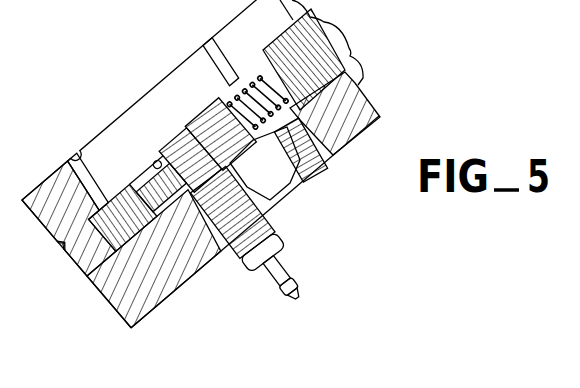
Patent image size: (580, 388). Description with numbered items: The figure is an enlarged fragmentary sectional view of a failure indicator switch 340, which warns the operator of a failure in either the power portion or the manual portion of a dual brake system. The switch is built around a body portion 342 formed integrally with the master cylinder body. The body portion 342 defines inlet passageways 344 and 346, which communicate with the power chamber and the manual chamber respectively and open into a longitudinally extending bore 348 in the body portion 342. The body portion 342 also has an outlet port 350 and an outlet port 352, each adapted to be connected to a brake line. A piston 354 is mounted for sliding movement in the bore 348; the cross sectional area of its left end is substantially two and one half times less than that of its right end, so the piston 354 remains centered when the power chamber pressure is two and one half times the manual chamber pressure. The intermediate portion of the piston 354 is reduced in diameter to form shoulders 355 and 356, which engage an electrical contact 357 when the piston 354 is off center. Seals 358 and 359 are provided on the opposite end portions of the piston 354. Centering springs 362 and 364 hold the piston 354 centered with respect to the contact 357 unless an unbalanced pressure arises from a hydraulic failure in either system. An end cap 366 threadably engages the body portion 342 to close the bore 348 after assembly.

The failure indicator switch 340 is at (384, 116).
The body portion 342 is at (362, 97).
The inlet passageway 344 is at (72, 150).
The inlet passageway 346 is at (201, 32).
The longitudinally extending bore 348 is at (184, 260).
The outlet port 350 is at (166, 292).
The outlet port 352 is at (318, 178).
The piston 354 is at (205, 125).
The shoulder 355 is at (158, 156).
The shoulder 356 is at (182, 140).
The electrical contact 357 is at (224, 183).
The seal 358 is at (150, 184).
The seal 359 is at (232, 95).
The centering spring 362 is at (67, 255).
The centering spring 364 is at (257, 82).
The end cap 366 is at (340, 46).